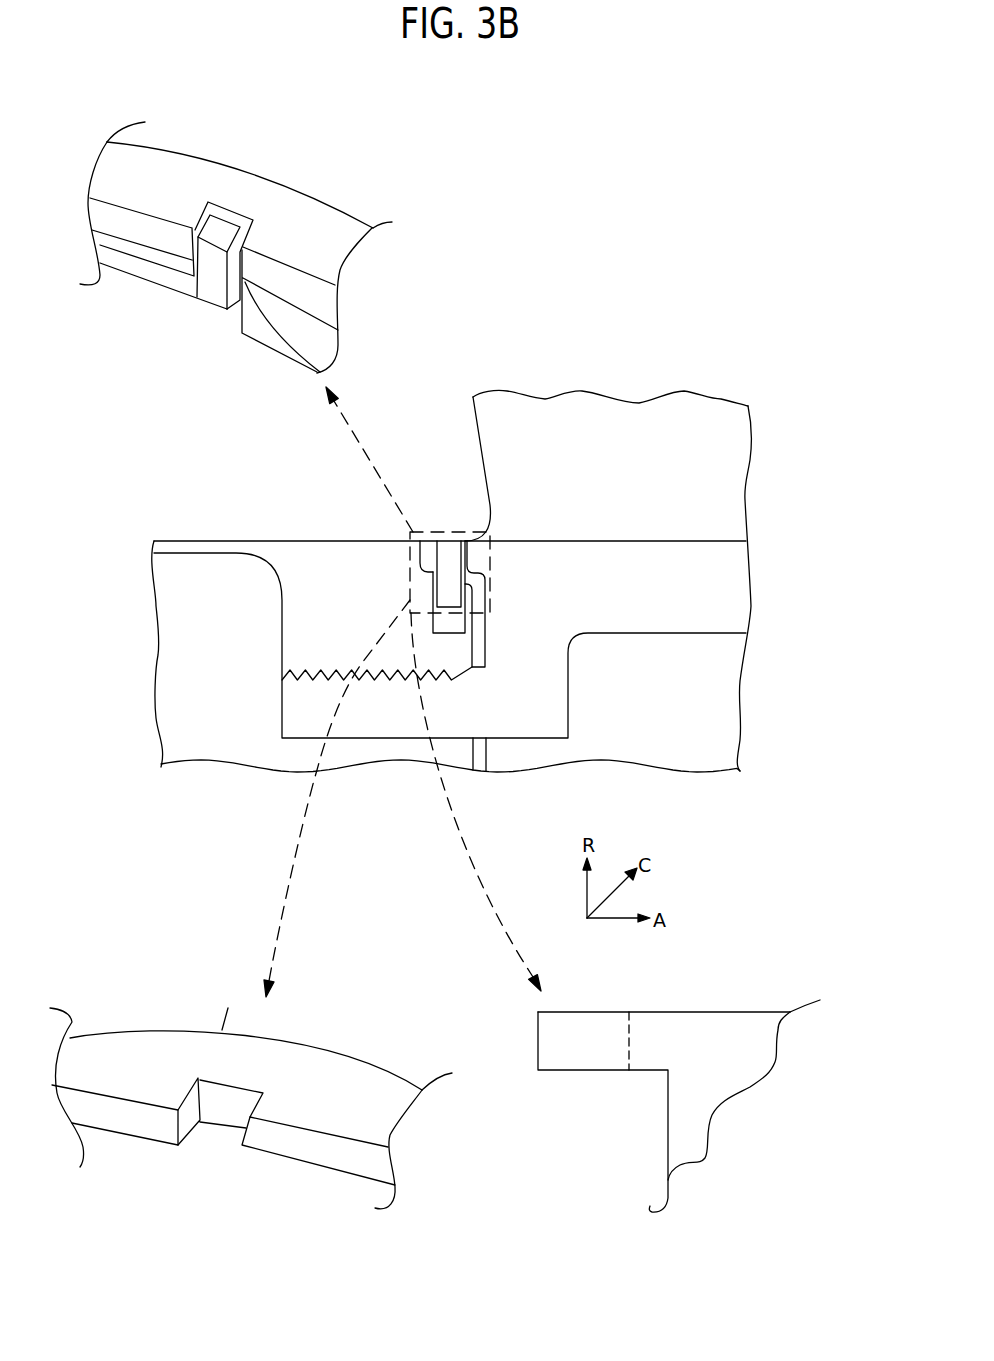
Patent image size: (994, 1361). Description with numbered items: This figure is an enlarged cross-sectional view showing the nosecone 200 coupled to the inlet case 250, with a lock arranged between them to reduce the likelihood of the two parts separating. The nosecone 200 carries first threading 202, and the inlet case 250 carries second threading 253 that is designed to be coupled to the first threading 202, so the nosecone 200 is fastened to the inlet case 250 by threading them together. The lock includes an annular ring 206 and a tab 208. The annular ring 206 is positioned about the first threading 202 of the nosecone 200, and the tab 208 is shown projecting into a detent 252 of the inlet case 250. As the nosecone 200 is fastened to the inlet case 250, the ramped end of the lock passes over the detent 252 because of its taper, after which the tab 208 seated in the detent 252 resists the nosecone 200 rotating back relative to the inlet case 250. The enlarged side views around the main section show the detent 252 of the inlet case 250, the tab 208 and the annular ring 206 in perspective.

The nosecone 200 is at (268, 557).
The first threading 202 is at (332, 672).
The annular ring 206 is at (272, 333).
The tab 208 is at (443, 552).
The inlet case 250 is at (612, 556).
The detent 252 is at (467, 553).
The second threading 253 is at (462, 673).